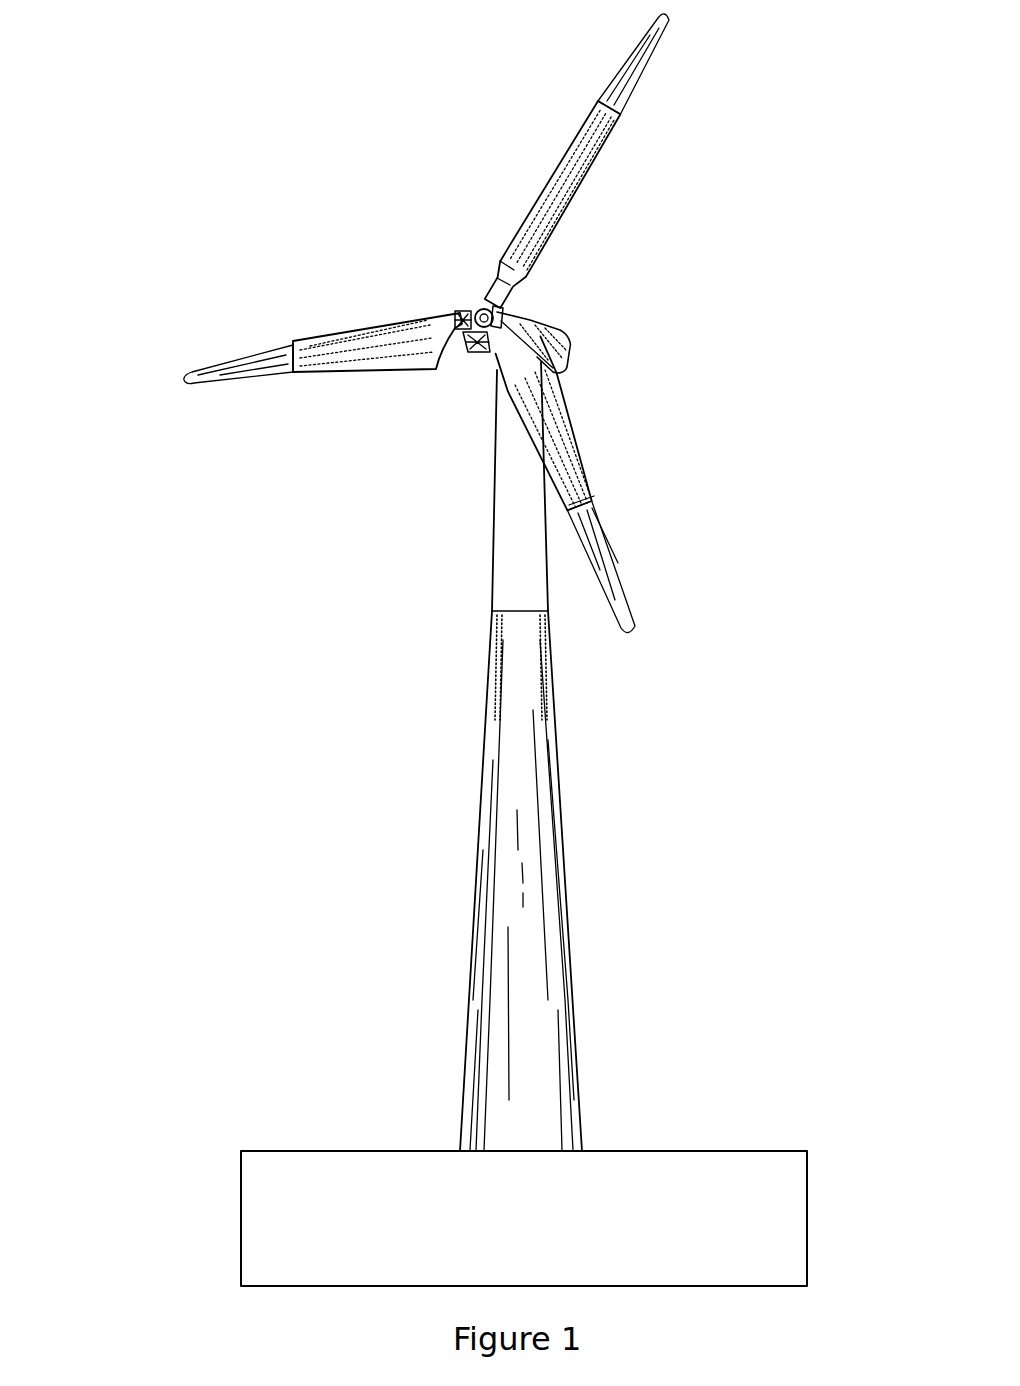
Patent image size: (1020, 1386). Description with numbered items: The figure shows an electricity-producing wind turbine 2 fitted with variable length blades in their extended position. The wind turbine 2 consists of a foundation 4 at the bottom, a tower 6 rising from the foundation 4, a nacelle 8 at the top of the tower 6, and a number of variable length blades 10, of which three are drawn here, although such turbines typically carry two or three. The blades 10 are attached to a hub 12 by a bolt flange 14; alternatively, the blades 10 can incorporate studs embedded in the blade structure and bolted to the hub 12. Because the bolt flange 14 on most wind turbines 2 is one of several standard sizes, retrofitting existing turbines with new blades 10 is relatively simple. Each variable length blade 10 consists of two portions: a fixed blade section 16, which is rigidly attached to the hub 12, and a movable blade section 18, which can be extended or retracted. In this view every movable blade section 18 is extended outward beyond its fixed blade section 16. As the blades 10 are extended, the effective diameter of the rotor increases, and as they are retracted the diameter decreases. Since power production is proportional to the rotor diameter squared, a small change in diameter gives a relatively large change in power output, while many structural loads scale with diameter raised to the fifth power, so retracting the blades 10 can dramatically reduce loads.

The wind turbine 2 is at (266, 494).
The foundation 4 is at (693, 1170).
The tower 6 is at (490, 610).
The nacelle 8 is at (553, 321).
The variable length blade 10 is at (455, 323).
The hub 12 is at (470, 308).
The bolt flange 14 is at (463, 315).
The fixed blade section 16 is at (557, 168).
The movable blade section 18 is at (584, 104).